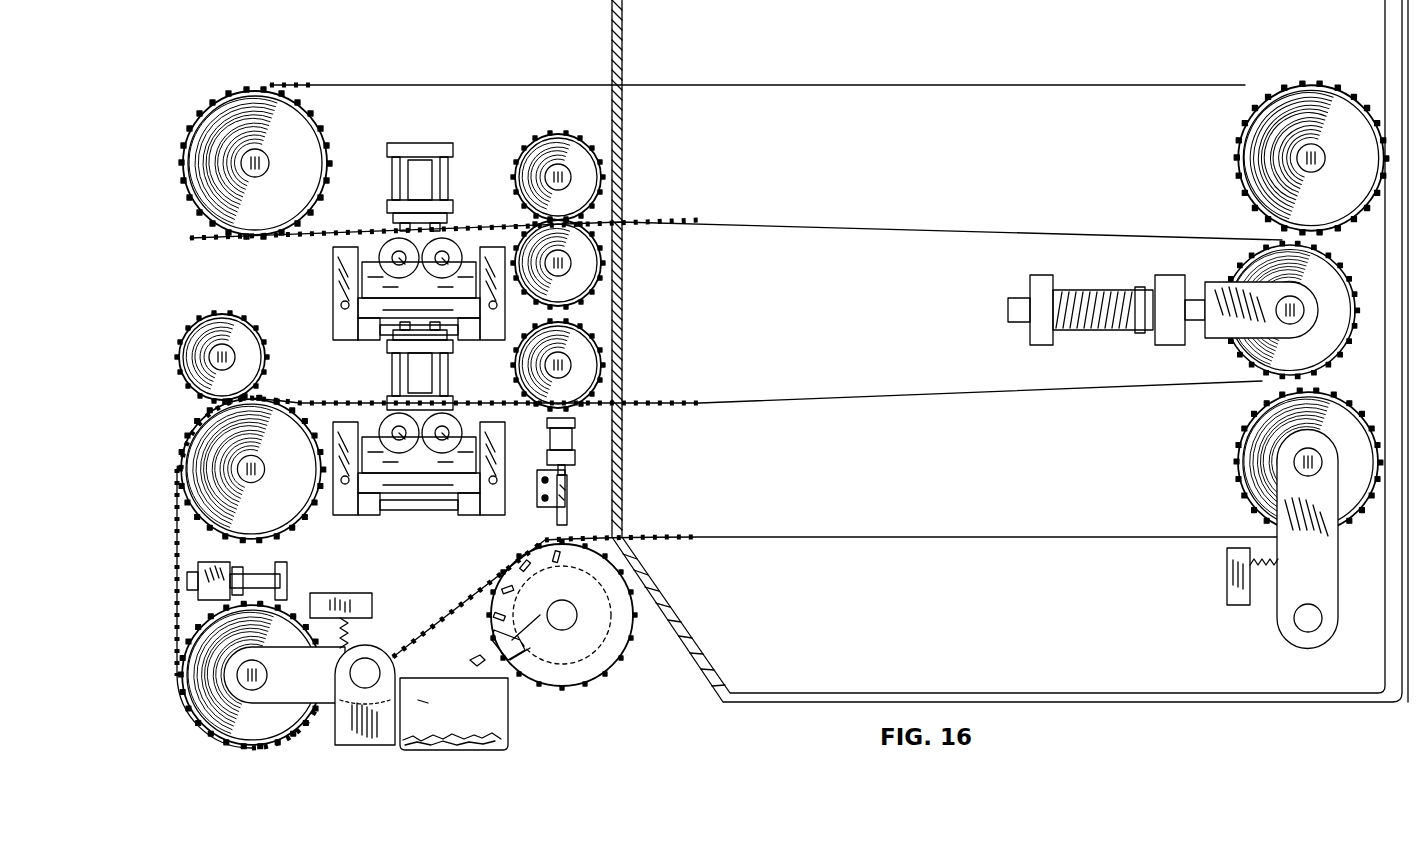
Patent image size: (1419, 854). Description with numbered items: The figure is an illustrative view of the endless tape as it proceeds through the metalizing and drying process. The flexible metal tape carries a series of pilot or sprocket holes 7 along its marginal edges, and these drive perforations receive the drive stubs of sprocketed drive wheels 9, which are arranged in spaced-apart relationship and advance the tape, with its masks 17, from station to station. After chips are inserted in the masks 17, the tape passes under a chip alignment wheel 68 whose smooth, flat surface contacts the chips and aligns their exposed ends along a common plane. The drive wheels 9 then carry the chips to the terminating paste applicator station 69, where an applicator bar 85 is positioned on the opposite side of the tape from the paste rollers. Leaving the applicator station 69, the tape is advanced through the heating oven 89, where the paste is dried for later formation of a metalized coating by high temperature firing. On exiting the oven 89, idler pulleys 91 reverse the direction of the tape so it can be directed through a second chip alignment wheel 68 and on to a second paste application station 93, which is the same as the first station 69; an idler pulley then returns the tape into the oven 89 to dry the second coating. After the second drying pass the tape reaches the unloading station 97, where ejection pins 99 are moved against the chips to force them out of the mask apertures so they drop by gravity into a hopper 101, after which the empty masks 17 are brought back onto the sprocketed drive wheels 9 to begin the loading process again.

The sprocket holes 7 is at (215, 238).
The sprocket drive wheels 9 is at (285, 510).
The mask 17 is at (160, 610).
The chip alignment wheel 68 is at (593, 150).
The paste applicator station 69 is at (425, 505).
The applicator bar 85 is at (390, 200).
The heating oven 89 is at (746, 353).
The idler pulley 91 is at (1282, 245).
The second paste application station 93 is at (335, 296).
The unloading station 97 is at (590, 617).
The ejection pins 99 is at (590, 520).
The hopper 101 is at (497, 713).